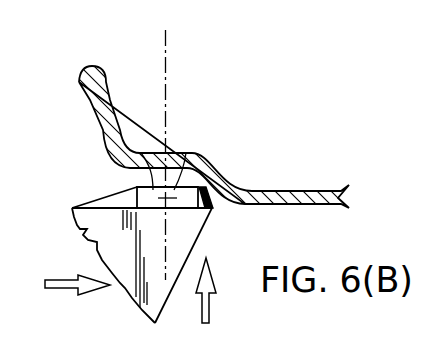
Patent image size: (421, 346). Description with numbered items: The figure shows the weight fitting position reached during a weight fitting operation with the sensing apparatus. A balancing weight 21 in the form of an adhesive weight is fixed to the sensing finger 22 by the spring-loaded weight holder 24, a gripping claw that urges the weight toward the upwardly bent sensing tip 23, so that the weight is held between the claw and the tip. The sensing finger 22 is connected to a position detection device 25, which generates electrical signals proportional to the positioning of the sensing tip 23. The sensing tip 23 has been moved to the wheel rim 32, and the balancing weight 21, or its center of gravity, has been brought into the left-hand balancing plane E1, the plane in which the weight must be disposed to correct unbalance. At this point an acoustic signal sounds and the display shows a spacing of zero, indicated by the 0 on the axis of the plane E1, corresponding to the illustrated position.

The electrode axis 0 is at (164, 140).
The balancing plane E1 is at (166, 55).
The balancing weight 21 is at (141, 153).
The sensing finger 22 is at (81, 230).
The sensing tip 23 is at (212, 197).
The weight holder 24 is at (133, 207).
The position detection device 25 is at (186, 153).
The wheel rim 32 is at (312, 191).